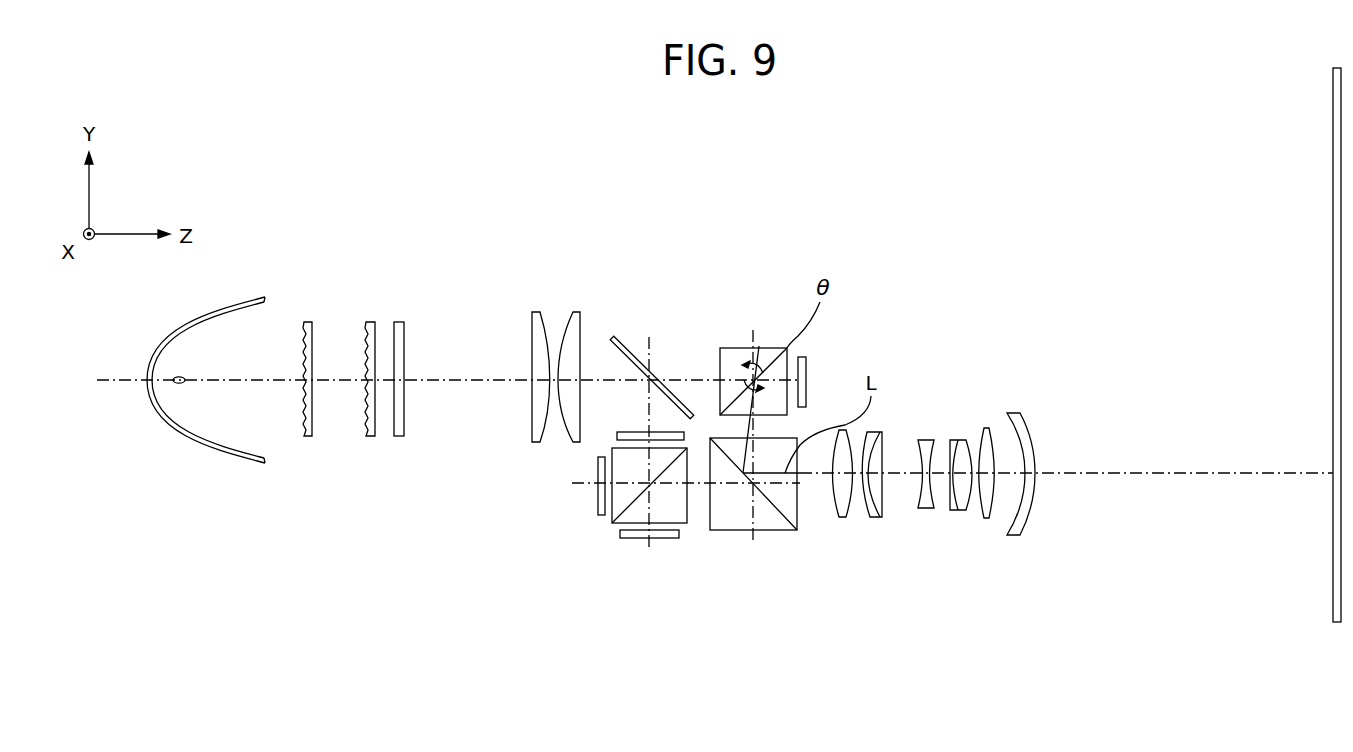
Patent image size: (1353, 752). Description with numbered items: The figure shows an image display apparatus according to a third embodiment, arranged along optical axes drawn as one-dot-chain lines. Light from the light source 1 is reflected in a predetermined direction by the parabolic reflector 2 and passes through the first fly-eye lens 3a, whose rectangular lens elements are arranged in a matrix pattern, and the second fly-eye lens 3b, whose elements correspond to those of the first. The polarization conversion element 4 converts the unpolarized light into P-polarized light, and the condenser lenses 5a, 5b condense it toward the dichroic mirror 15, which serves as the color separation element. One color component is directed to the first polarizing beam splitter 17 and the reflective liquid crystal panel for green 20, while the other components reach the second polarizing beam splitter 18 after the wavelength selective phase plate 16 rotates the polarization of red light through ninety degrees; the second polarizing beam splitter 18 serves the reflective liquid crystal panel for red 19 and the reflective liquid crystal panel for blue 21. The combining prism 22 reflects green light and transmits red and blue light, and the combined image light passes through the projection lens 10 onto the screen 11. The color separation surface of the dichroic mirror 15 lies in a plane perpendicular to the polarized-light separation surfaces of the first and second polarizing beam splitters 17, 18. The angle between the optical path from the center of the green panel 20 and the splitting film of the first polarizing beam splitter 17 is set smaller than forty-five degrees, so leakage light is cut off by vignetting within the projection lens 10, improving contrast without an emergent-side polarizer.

The light source 1 is at (185, 378).
The reflector 2 is at (178, 440).
The first fly-eye lens 3a is at (311, 437).
The second fly-eye lens 3b is at (368, 437).
The polarization conversion element 4 is at (398, 437).
The condenser lens 5a is at (532, 312).
The condenser lens 5b is at (576, 312).
The projection lens 10 is at (1058, 528).
The screen 11 is at (1334, 268).
The dichroic mirror 15 is at (617, 339).
The wavelength selective phase plate 16 is at (616, 435).
The first polarizing beam splitter 17 is at (768, 348).
The second polarizing beam splitter 18 is at (612, 518).
The reflective liquid crystal panel for red 19 is at (598, 505).
The reflective liquid crystal panel for green 20 is at (807, 362).
The reflective liquid crystal panel for blue 21 is at (655, 538).
The combining prism 22 is at (768, 530).